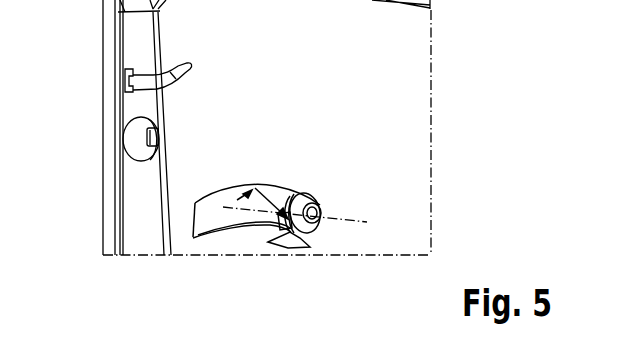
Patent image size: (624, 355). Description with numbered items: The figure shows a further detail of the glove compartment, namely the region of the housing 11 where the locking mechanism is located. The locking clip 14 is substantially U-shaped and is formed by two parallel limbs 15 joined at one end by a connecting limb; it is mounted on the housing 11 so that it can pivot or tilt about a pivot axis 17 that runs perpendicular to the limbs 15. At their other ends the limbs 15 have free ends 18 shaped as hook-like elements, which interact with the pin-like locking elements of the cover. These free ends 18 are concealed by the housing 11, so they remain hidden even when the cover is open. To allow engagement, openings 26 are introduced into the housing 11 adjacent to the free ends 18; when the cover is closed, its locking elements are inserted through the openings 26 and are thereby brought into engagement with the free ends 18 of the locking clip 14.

The housing 11 is at (133, 200).
The locking clip 14 is at (225, 203).
The parallel limbs 15 is at (268, 210).
The pivot axis 17 is at (345, 220).
The free ends 18 is at (150, 53).
The openings 26 is at (126, 78).